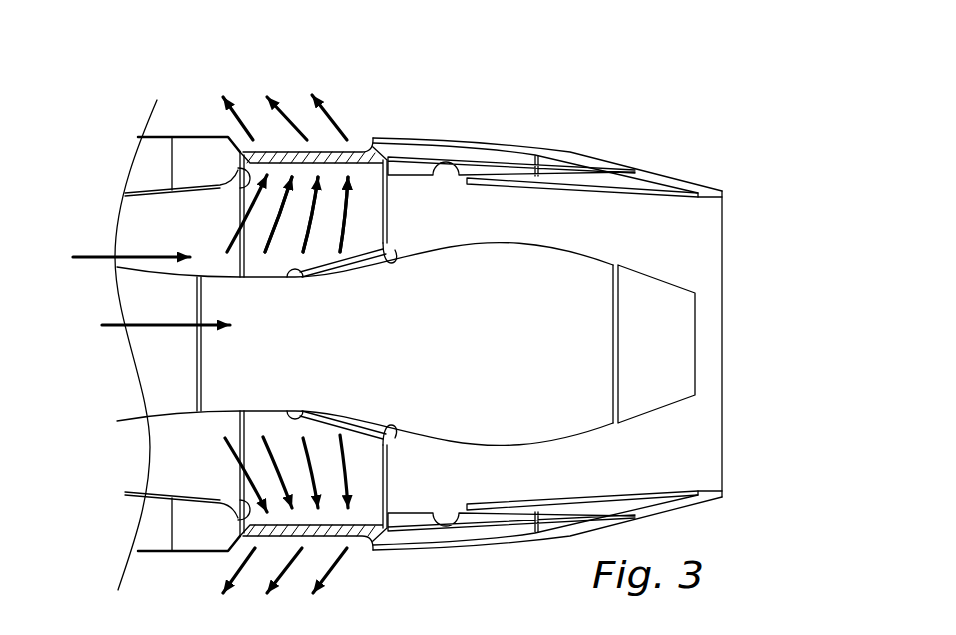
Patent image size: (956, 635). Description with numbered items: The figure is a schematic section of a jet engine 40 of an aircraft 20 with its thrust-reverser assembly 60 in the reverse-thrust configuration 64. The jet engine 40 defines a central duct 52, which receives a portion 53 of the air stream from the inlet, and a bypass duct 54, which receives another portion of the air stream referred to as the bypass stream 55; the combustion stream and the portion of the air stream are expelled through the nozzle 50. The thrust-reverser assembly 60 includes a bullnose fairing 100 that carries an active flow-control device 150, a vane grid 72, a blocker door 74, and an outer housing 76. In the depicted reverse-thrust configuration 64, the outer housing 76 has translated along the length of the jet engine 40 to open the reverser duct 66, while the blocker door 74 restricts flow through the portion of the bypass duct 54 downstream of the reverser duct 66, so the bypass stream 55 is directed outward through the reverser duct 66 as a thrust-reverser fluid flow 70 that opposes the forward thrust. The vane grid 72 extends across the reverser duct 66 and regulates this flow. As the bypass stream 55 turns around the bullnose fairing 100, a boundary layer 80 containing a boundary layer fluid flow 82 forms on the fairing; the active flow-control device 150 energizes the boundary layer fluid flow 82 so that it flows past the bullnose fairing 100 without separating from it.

The aircraft 20 is at (737, 70).
The jet engine 40 is at (762, 102).
The nozzle 50 is at (757, 270).
The central duct 52 is at (158, 372).
The portion of the air stream 53 is at (110, 322).
The bypass duct 54 is at (130, 240).
The bypass stream 55 is at (85, 260).
The thrust-reverser assembly 60 is at (292, 70).
The reverse-thrust configuration 64 is at (328, 85).
The reverser duct 66 is at (357, 143).
The thrust-reverser fluid flow 70 is at (250, 102).
The vane grid 72 is at (354, 167).
The blocker door 74 is at (390, 240).
The outer housing 76 is at (598, 160).
The boundary layer 80 is at (235, 185).
The boundary layer fluid flow 82 is at (253, 200).
The bullnose fairing 100 is at (217, 135).
The active flow-control device 150 is at (190, 152).